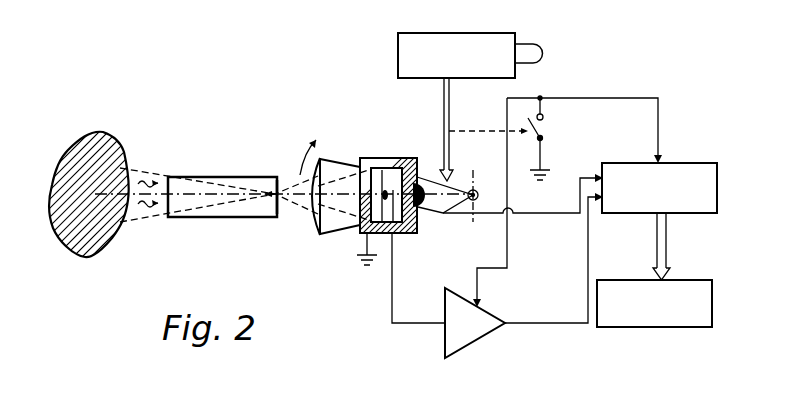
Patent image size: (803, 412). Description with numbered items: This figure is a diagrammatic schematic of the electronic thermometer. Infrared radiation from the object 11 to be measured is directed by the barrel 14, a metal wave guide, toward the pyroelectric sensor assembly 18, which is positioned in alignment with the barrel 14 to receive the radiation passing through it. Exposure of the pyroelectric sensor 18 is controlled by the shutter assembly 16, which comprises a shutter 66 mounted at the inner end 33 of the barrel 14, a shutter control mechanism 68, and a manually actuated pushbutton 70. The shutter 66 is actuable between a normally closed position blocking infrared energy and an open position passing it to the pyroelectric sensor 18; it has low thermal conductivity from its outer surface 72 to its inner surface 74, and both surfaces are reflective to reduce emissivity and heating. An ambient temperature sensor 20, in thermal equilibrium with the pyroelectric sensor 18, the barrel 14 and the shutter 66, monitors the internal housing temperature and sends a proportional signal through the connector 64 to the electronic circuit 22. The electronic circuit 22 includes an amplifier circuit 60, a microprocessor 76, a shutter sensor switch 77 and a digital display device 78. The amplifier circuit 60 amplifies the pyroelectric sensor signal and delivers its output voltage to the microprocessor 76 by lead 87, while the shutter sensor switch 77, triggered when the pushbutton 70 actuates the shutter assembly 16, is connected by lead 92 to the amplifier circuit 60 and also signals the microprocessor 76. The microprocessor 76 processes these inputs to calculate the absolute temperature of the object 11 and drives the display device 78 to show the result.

The object to be measured 11 is at (103, 132).
The barrel 14 is at (197, 177).
The inner end of the barrel 33 is at (280, 177).
The shutter 66 is at (312, 218).
The inner surface of the shutter 74 is at (321, 228).
The outer surface of the shutter 72 is at (310, 170).
The pyroelectric sensor assembly 18 is at (397, 157).
The ambient temperature sensor 20 is at (422, 210).
The shutter assembly 16 is at (390, 63).
The shutter control mechanism 68 is at (485, 38).
The pushbutton 70 is at (543, 50).
The shutter sensor switch 77 is at (548, 128).
The lead 92 is at (492, 270).
The connector 64 is at (553, 218).
The lead 87 is at (585, 253).
The amplifier circuit 60 is at (470, 333).
The electronic circuit 22 is at (399, 345).
The microprocessor 76 is at (680, 168).
The display device 78 is at (680, 287).